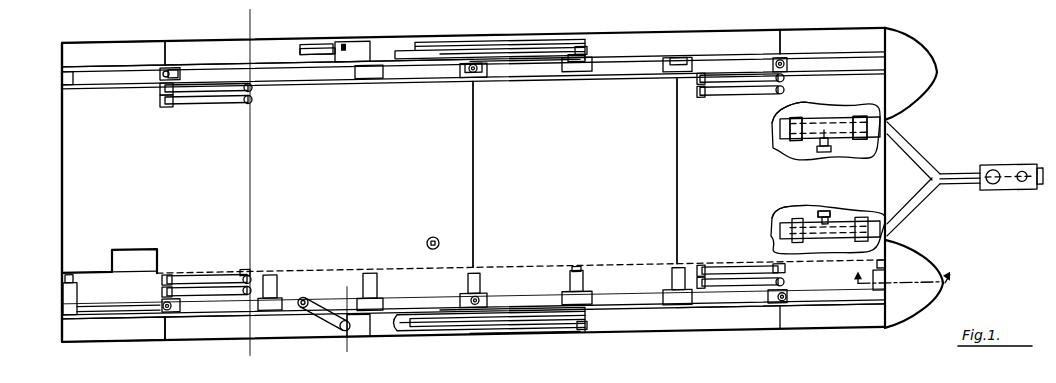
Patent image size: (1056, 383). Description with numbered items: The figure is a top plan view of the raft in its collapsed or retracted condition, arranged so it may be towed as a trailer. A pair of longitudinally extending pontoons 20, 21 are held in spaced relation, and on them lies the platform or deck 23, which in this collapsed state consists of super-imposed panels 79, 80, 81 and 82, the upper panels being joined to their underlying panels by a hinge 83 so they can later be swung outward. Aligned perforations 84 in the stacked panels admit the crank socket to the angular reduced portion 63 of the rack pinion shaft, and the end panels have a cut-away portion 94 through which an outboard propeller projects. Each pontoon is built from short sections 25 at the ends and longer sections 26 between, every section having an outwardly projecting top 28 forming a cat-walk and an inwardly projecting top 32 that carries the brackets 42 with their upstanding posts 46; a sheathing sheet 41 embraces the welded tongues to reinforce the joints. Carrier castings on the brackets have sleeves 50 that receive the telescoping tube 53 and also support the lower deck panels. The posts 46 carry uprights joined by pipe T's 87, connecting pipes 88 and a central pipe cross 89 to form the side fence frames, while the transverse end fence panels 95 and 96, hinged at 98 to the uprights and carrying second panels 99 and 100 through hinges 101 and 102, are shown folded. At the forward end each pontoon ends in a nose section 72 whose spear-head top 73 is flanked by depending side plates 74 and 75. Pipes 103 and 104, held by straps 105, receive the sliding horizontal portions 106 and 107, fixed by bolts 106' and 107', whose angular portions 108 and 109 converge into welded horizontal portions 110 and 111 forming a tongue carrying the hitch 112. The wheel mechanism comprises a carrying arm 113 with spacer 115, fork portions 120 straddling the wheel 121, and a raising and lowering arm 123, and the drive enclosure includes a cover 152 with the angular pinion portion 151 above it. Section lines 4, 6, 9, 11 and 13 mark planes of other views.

The pontoon 20 is at (62, 60).
The pontoon 21 is at (62, 332).
The platform or deck 23 is at (62, 223).
The pontoon section 25 is at (815, 45).
The pontoon section 26 is at (290, 45).
The outwardly projecting horizontal top portion 28 is at (180, 47).
The section line 4- 4 is at (257, 11).
The upstanding post 46 is at (70, 75).
The connecting pipe 88 is at (540, 75).
The raising and lowering arm 123 is at (323, 62).
The cover 152 is at (365, 50).
The reduced angular portion 151 is at (345, 50).
The wheel 121 is at (415, 52).
The offset portion 120 is at (470, 53).
The carrying arm 113 is at (530, 52).
The spacer 115 is at (588, 62).
The pipe cross 89 is at (465, 86).
The pipe T 87 is at (570, 82).
The sheathing sheet 41 is at (740, 72).
The sleeve 50 is at (583, 293).
The transverse fence end panel 96 is at (735, 100).
The hinge 102 is at (703, 95).
The hinge connection 98 is at (795, 92).
The second panel 100 is at (740, 105).
The deck panel 79 is at (675, 142).
The deck panel 81 is at (471, 180).
The upper deck panel 82 is at (250, 160).
The deck panel 80 is at (677, 232).
The hinge 83 is at (520, 256).
The sleeve or tube 53 is at (585, 257).
The reduced portion 63 is at (437, 246).
The aligned perforations 84 is at (429, 246).
The section line 9- 9 is at (458, 240).
The bracket 42 is at (62, 292).
The cut-away portion 94 is at (145, 252).
The inwardly projecting horizontal top portion 32 is at (168, 282).
The transverse fence end panel 95 is at (200, 280).
The second panel 99 is at (230, 285).
The hinge 101 is at (285, 290).
The section line 13- 13 is at (350, 287).
The section line 6- 6 is at (282, 321).
The section line 11- 11 is at (835, 282).
The horizontal portion 106 is at (826, 116).
The bolt 106' is at (825, 150).
The pipe or tube 103 is at (768, 160).
The strap 105 is at (800, 158).
The horizontal portion 107 is at (828, 215).
The bolt 107' is at (843, 203).
The pipe or tube 104 is at (775, 238).
The side plate 75 is at (922, 60).
The forward or nose pontoon section 72 is at (940, 90).
The top 73 is at (920, 103).
The side plate 74 is at (918, 118).
The angularly extending portion 108 is at (925, 162).
The angularly extending portion 109 is at (920, 220).
The horizontal portion 110 is at (963, 185).
The horizontal portion 111 is at (965, 200).
The hitch 112 is at (1022, 180).